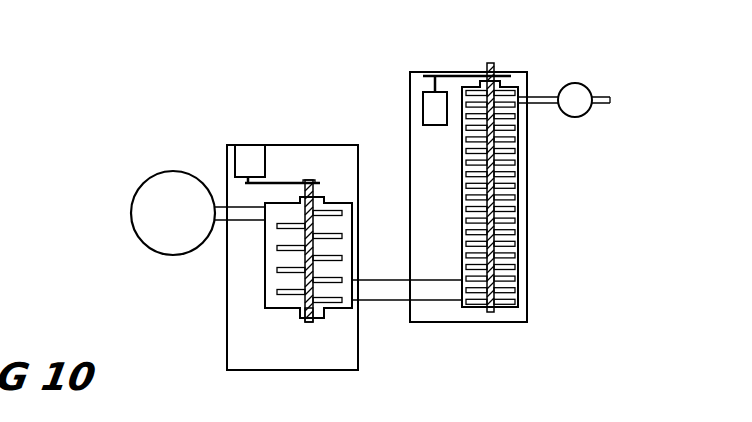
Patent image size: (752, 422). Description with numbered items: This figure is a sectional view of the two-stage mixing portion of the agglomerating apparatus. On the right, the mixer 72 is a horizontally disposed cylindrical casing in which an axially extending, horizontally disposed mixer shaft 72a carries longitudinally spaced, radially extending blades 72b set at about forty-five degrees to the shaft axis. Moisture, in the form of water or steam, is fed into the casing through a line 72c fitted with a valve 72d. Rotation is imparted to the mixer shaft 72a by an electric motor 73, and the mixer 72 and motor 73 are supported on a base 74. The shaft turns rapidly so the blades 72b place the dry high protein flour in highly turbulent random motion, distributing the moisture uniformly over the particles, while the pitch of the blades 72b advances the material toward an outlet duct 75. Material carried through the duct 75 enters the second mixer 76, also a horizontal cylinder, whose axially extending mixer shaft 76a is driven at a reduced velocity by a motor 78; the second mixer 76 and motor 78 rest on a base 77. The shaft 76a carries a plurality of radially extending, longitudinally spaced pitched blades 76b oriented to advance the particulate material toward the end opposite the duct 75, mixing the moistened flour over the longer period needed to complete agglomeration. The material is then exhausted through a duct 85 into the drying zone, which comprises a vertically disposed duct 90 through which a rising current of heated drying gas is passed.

The vertically disposed duct 90 is at (130, 213).
The duct 85 is at (215, 226).
The base 77 is at (306, 371).
The motor 78 is at (256, 148).
The second mixer 76 is at (283, 318).
The mixer shaft 76a is at (306, 324).
The pitched blades 76b is at (277, 279).
The outlet duct 75 is at (398, 309).
The base 74 is at (522, 312).
The electric motor 73 is at (423, 112).
The mixer 72 is at (462, 226).
The mixer shaft 72a is at (495, 67).
The blades 72b is at (510, 197).
The line 72c is at (545, 92).
The valve 72d is at (586, 114).